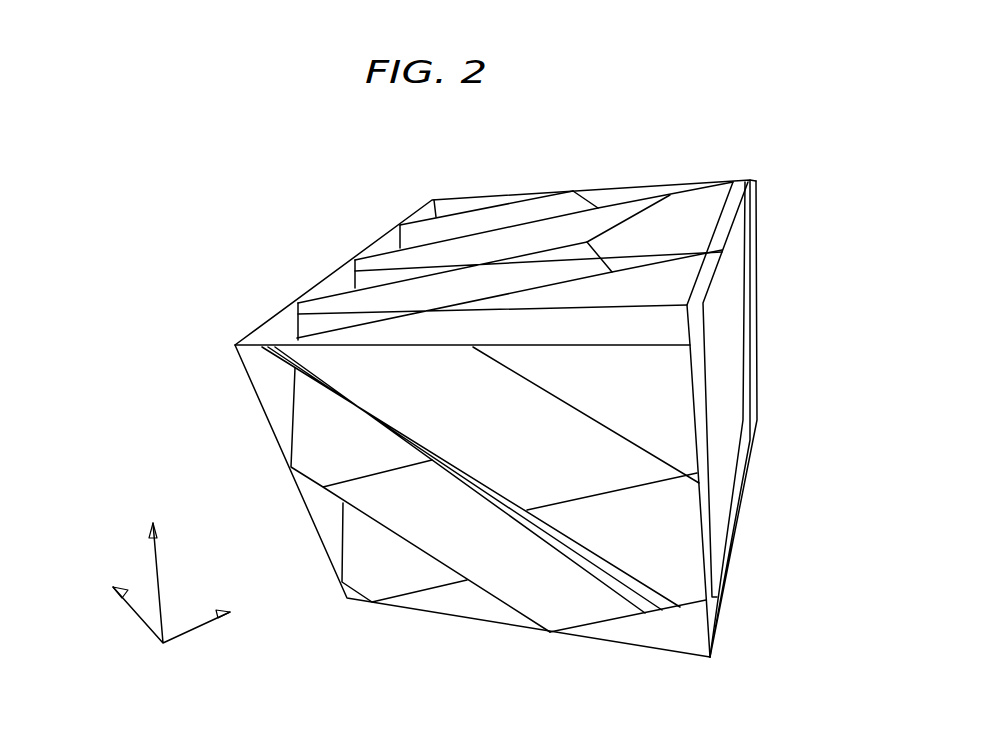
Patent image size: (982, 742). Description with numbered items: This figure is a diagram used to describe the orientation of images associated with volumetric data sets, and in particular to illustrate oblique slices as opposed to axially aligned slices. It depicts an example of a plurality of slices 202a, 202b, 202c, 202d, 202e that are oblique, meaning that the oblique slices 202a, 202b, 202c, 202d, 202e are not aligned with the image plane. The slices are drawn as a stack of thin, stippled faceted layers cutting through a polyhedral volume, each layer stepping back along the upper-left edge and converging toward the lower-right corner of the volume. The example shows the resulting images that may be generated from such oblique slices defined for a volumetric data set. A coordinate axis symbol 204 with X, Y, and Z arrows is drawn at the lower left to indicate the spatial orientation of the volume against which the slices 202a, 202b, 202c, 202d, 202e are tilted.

The oblique slice 202a is at (697, 440).
The oblique slice 202b is at (723, 277).
The oblique slice 202c is at (745, 212).
The oblique slice 202d is at (752, 180).
The oblique slice 202e is at (588, 200).
The coordinate axes 204 is at (162, 644).